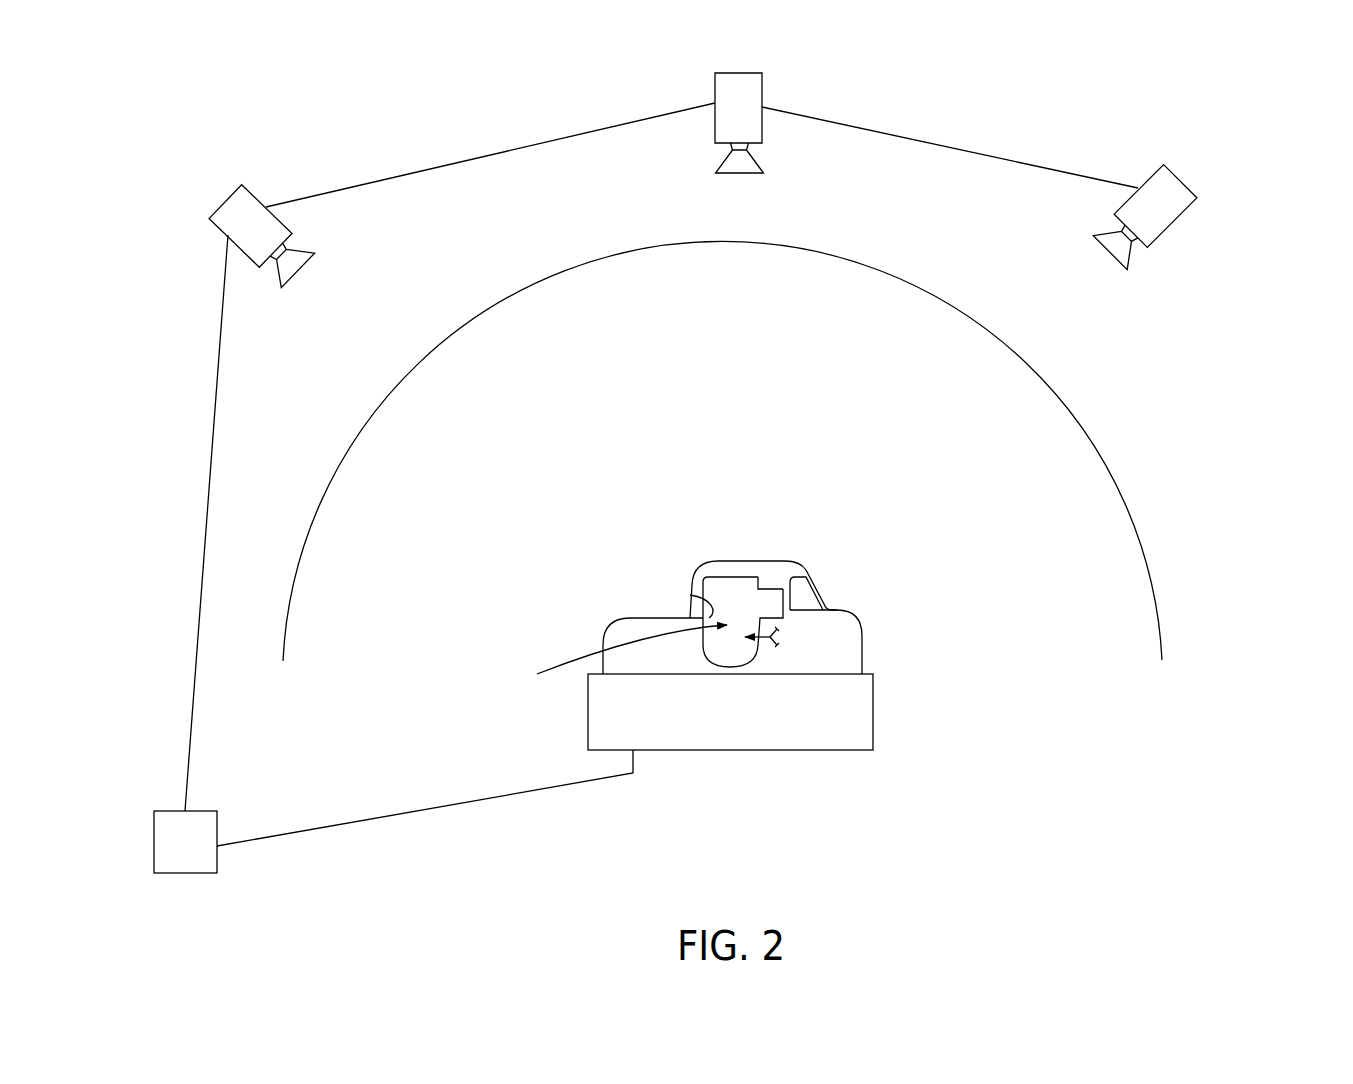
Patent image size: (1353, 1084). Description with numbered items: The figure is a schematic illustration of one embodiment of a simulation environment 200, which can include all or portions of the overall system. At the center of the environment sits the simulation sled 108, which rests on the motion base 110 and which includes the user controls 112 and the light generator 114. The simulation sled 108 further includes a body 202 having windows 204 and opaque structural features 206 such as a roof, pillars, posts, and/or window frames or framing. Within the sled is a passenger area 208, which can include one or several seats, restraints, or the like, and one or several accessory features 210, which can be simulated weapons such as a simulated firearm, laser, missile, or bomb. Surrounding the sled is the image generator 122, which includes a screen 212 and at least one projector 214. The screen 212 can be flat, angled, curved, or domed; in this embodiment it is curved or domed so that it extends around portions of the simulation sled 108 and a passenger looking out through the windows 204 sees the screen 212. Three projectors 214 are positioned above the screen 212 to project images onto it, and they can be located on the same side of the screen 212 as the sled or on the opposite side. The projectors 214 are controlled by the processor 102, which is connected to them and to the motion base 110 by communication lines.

The simulation environment 200 is at (1225, 145).
The screen 212 is at (1052, 380).
The projector 214 is at (762, 91).
The image generator 122 is at (178, 373).
The processor 102 is at (154, 843).
The motion base 110 is at (873, 710).
The simulation sled 108 is at (853, 614).
The body 202 is at (815, 545).
The opaque structural features 206 is at (712, 563).
The windows 204 is at (688, 608).
The light generator 114 is at (765, 591).
The user controls 112 is at (690, 595).
The passenger area 208 is at (607, 662).
The accessory features 210 is at (768, 645).